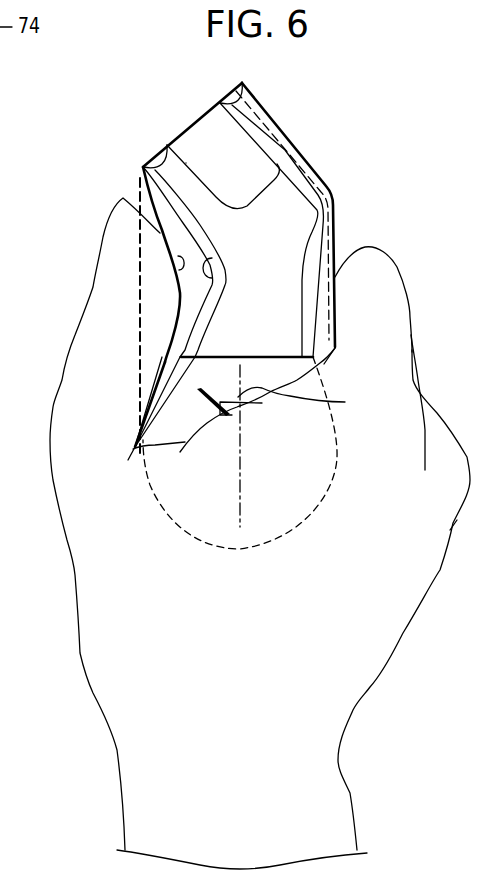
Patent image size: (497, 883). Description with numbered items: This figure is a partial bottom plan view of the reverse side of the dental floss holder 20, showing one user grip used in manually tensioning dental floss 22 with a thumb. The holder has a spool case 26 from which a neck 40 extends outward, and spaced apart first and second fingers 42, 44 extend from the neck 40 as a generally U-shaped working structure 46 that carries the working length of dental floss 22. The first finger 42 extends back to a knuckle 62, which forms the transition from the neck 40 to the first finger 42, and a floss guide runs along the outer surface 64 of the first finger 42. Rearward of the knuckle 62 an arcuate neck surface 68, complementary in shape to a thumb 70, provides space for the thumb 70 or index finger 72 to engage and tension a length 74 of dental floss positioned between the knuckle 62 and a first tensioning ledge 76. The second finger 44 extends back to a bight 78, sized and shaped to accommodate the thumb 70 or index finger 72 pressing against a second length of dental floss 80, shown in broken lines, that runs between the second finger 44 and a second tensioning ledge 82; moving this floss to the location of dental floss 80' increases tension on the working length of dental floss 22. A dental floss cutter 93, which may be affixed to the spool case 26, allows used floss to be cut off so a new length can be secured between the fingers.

The dental floss holder 20 is at (350, 146).
The dental floss 22 is at (196, 123).
The spool case 26 is at (165, 420).
The neck 40 is at (272, 317).
The first finger 42 is at (258, 102).
The second finger 44 is at (189, 168).
The U-shaped working structure 46 is at (246, 193).
The knuckle 62 is at (336, 187).
The outer surface 64 is at (284, 128).
The arcuate neck surface 68 is at (318, 307).
The thumb 70 is at (75, 341).
The index finger 72 is at (403, 276).
The length of dental floss 74 is at (322, 270).
The first tensioning ledge 76 is at (337, 457).
The bight 78 is at (212, 266).
The second length of dental floss 80 is at (93, 317).
The dental floss 80' is at (120, 271).
The second tensioning ledge 82 is at (134, 449).
The dental floss cutter 93 is at (262, 403).